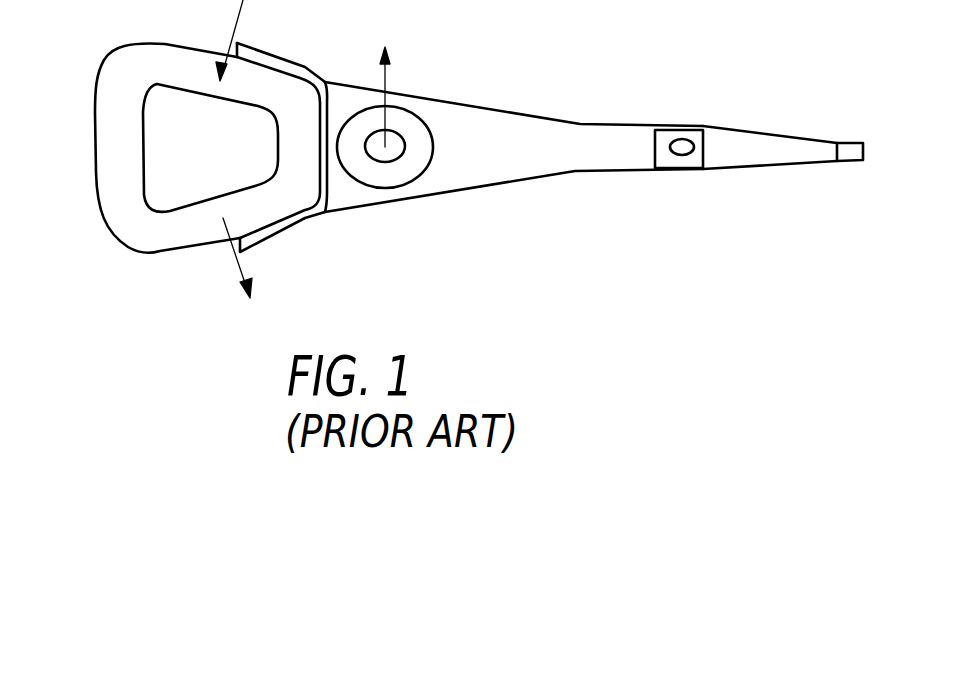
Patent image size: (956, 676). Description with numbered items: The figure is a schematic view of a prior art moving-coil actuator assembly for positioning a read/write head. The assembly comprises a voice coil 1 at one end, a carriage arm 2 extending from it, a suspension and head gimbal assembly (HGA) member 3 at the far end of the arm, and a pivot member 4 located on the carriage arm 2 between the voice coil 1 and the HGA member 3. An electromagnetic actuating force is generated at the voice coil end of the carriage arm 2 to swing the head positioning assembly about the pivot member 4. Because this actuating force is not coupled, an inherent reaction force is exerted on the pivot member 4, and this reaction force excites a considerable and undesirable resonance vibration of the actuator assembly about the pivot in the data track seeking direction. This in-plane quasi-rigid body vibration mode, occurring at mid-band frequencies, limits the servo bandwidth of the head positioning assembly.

The voice coil 1 is at (113, 246).
The carriage arm 2 is at (513, 172).
The suspension and head gimbal assembly (HGA) member 3 is at (780, 165).
The pivot member 4 is at (423, 120).